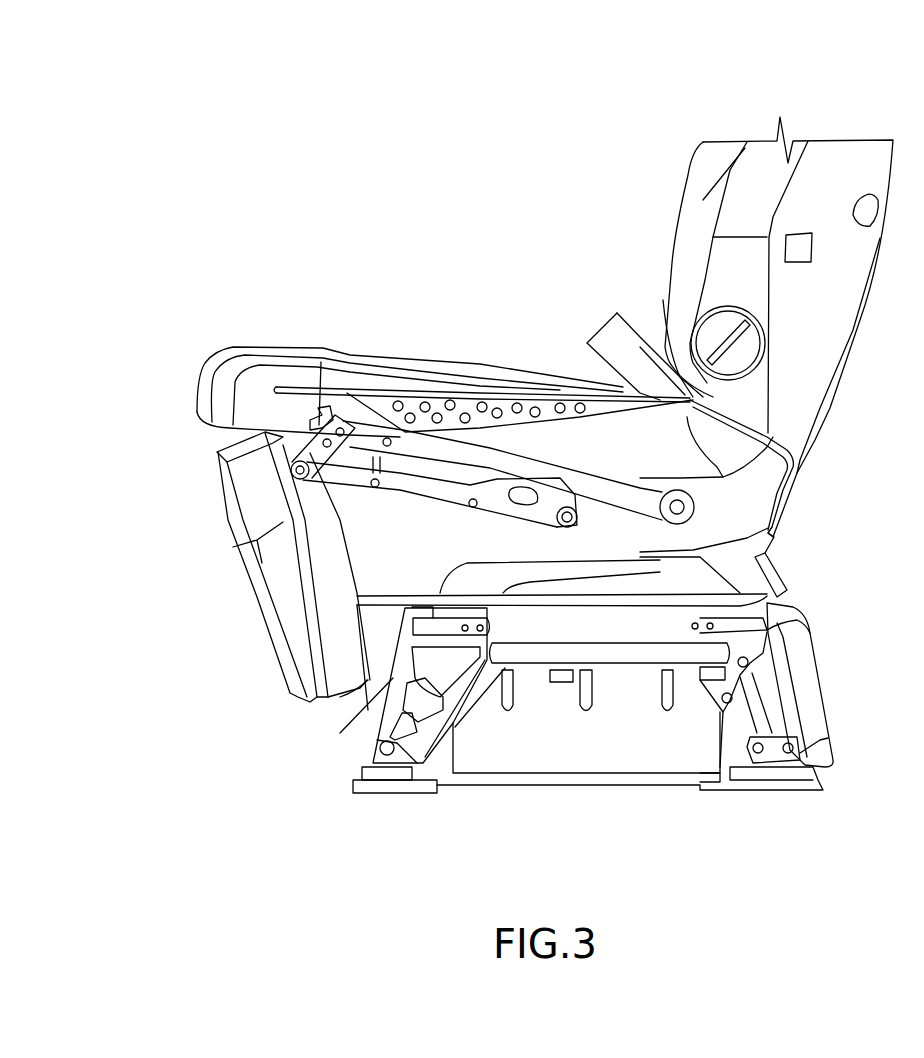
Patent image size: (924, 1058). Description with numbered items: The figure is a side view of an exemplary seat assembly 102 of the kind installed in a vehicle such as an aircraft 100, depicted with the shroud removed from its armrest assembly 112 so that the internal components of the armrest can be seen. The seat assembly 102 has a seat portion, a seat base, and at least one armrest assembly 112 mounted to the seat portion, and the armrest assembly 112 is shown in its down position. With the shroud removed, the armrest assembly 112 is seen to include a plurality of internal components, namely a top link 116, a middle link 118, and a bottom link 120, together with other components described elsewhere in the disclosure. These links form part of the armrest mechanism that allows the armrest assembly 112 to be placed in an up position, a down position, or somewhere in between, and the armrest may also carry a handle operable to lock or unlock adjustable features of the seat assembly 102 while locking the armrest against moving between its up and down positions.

The aircraft 100 is at (183, 90).
The seat assembly 102 is at (293, 190).
The armrest assembly 112 is at (380, 400).
The top link 116 is at (482, 380).
The middle link 118 is at (408, 448).
The bottom link 120 is at (427, 498).